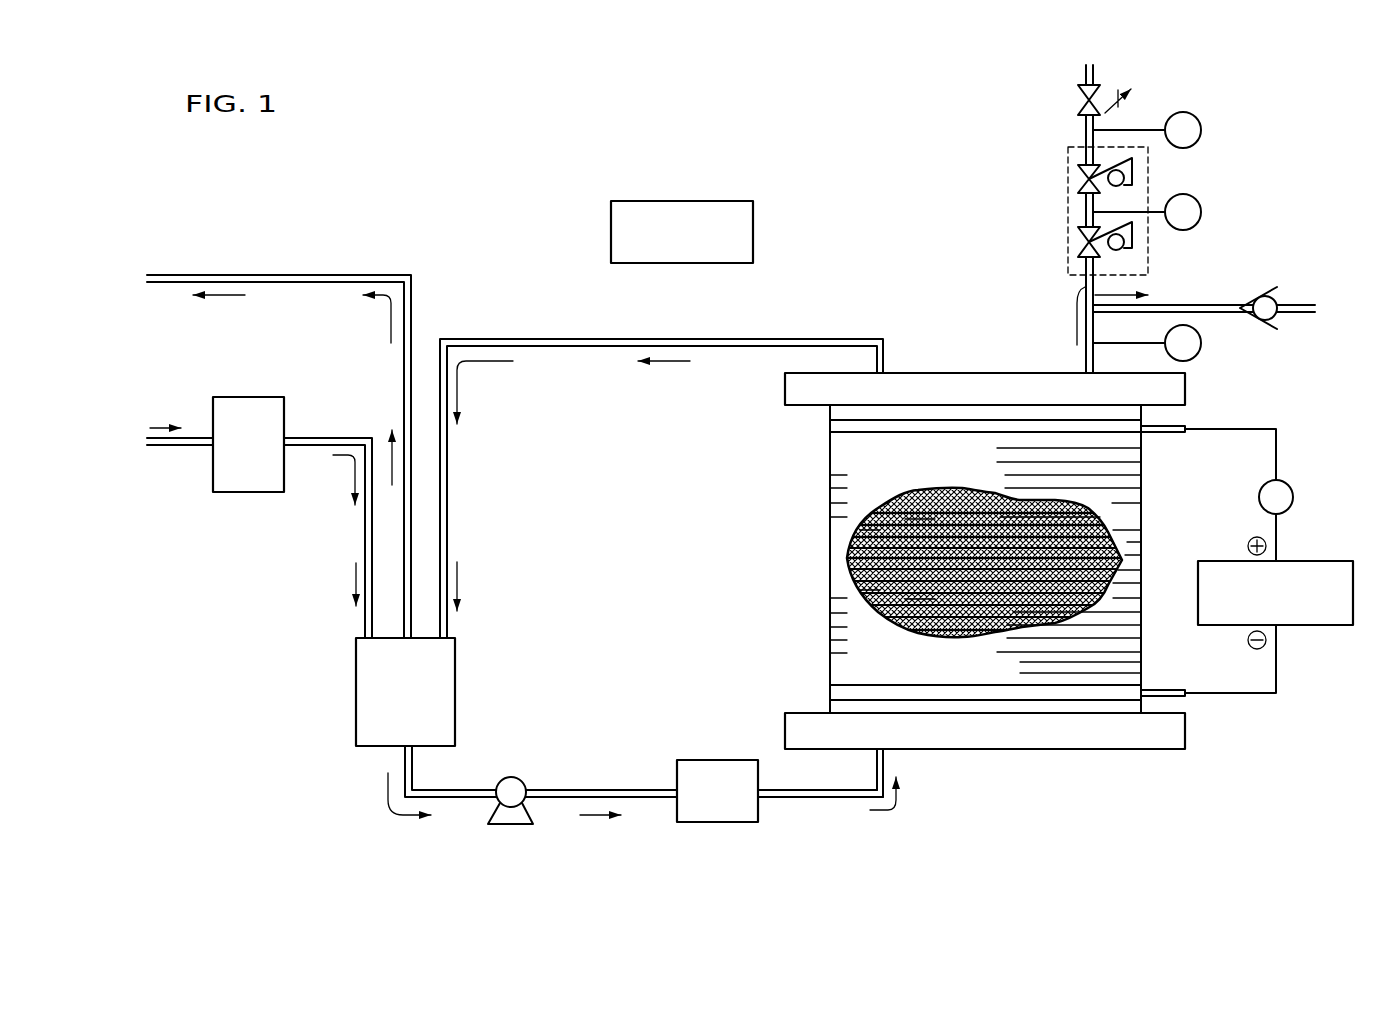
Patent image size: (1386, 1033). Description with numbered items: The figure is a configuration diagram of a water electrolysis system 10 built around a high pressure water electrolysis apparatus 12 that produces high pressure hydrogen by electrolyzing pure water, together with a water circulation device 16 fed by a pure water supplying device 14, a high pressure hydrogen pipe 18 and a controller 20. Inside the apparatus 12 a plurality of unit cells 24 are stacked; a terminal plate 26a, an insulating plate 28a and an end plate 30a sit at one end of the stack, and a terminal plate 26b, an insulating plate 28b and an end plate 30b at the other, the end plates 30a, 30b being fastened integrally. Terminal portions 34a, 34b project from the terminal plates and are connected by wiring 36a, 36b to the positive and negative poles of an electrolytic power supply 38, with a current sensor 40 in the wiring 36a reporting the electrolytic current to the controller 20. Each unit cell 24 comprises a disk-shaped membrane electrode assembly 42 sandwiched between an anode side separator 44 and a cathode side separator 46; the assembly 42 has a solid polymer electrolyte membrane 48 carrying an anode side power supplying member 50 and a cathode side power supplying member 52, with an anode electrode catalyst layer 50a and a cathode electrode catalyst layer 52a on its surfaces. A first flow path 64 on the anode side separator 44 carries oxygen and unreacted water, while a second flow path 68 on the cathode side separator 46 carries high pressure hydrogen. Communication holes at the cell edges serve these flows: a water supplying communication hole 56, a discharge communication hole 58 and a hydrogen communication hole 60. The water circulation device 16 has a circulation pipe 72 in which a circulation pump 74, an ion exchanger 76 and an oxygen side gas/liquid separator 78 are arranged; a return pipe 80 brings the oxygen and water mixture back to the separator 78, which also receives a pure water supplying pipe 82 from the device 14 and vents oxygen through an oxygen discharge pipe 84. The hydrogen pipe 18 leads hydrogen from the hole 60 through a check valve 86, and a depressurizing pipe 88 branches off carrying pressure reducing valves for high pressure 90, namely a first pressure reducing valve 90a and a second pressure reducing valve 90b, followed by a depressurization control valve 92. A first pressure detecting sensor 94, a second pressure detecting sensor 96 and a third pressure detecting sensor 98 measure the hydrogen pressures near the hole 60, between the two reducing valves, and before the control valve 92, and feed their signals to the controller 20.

The water electrolysis system 10 is at (419, 136).
The high pressure water electrolysis apparatus 12 is at (937, 366).
The pure water supplying device 14 is at (236, 493).
The water circulation device 16 is at (774, 812).
The high pressure hydrogen pipe 18 is at (1215, 303).
The controller 20 is at (648, 200).
The unit cells 24 is at (1143, 510).
The terminal plate 26a is at (1003, 430).
The terminal plate 26b is at (1027, 690).
The insulating plate 28a is at (973, 415).
The insulating plate 28b is at (965, 705).
The end plate 30a is at (1190, 376).
The end plate 30b is at (1152, 751).
The terminal portion 34a is at (1168, 435).
The terminal portion 34b is at (1163, 689).
The wiring 36a is at (1278, 450).
The wiring 36b is at (1278, 658).
The electrolytic power supply 38 is at (1320, 560).
The current sensor 40 is at (1259, 484).
The membrane electrode assembly 42 is at (911, 561).
The anode side separator 44 is at (917, 524).
The cathode side separator 46 is at (920, 586).
The solid polymer electrolyte membrane 48 is at (848, 556).
The anode side power supplying member 50 is at (848, 542).
The anode electrode catalyst layer 50a is at (970, 548).
The cathode side power supplying member 52 is at (845, 565).
The cathode electrode catalyst layer 52a is at (970, 560).
The water supplying communication hole 56 is at (883, 753).
The discharge communication hole 58 is at (890, 369).
The hydrogen communication hole 60 is at (1084, 370).
The first flow path 64 is at (865, 535).
The second flow path 68 is at (865, 572).
The circulation pipe 72 is at (574, 790).
The circulation pump 74 is at (509, 777).
The ion exchanger 76 is at (700, 759).
The oxygen side gas/liquid separator 78 is at (456, 668).
The return pipe 80 is at (565, 348).
The pure water supplying pipe 82 is at (313, 447).
The oxygen discharge pipe 84 is at (270, 274).
The check valve 86 is at (1257, 294).
The depressurizing pipe 88 is at (1085, 287).
The pressure reducing valves for high pressure 90 is at (1068, 213).
The first pressure reducing valve 90a is at (1078, 250).
The second pressure reducing valve 90b is at (1078, 185).
The depressurization control valve 92 is at (1078, 108).
The first pressure detecting sensor 94 is at (1201, 341).
The second pressure detecting sensor 96 is at (1201, 203).
The third pressure detecting sensor 98 is at (1201, 120).